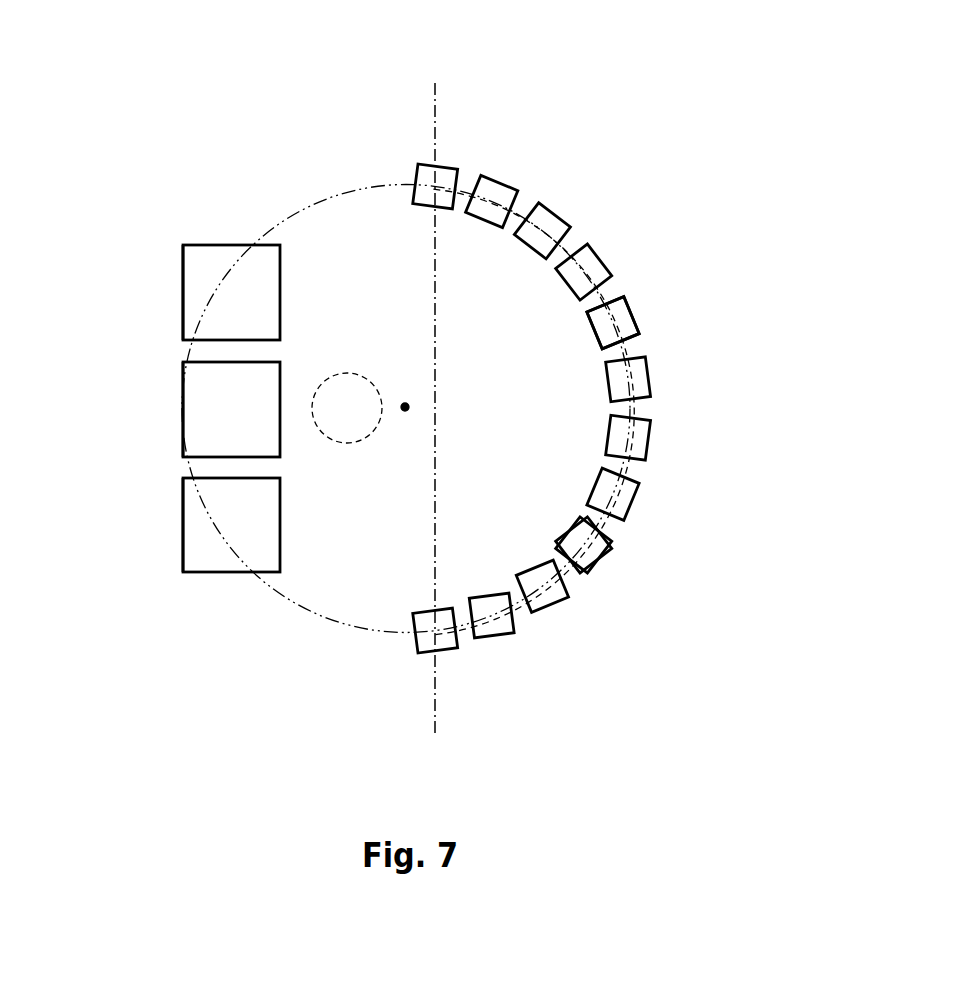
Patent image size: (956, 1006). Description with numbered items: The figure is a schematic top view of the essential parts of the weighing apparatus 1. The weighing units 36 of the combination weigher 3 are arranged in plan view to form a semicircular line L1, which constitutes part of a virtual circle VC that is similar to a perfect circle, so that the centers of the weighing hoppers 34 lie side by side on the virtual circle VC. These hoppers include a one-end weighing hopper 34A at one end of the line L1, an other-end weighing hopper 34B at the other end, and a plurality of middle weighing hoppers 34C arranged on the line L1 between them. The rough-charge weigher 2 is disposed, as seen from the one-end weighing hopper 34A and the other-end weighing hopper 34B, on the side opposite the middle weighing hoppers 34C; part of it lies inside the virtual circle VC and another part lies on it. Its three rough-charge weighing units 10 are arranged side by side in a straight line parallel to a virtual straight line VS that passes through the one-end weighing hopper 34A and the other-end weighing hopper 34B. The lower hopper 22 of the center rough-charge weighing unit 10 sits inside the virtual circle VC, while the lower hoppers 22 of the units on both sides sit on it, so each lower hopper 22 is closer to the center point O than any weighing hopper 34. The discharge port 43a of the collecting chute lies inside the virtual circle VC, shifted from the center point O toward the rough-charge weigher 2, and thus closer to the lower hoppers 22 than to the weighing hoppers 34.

The weighing apparatus 1 is at (595, 108).
The rough-charge weigher 2 is at (168, 232).
The combination weigher 3 is at (653, 210).
The rough-charge weighing unit 10 is at (183, 320).
The lower hopper 22 is at (183, 268).
The weighing hopper 34 is at (607, 548).
The one-end weighing hopper 34A is at (455, 167).
The other-end weighing hopper 34B is at (453, 652).
The middle weighing hopper 34C is at (632, 316).
The weighing unit 36 is at (637, 494).
The discharge port 43a is at (352, 443).
The center point O is at (405, 405).
The virtual straight line VS is at (435, 117).
The virtual circle VC is at (316, 203).
The semicircular line L1 is at (607, 296).